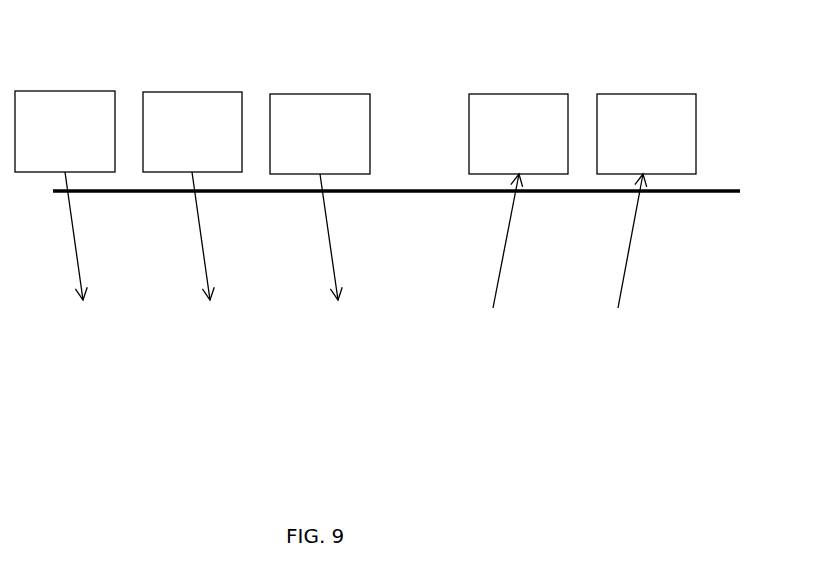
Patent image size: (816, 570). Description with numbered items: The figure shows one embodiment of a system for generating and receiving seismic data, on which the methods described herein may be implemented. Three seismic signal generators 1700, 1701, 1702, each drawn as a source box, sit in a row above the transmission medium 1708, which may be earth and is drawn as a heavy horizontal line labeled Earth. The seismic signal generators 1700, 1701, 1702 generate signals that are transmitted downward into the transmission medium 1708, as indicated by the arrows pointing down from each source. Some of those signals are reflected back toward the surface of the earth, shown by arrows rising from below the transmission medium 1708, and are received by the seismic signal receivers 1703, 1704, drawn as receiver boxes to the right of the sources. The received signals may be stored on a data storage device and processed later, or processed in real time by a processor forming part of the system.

The seismic signal generator 1700 is at (62, 91).
The seismic signal generator 1701 is at (189, 92).
The seismic signal generator 1702 is at (318, 94).
The seismic signal receiver 1703 is at (516, 94).
The seismic signal receiver 1704 is at (643, 94).
The transmission medium 1708 is at (396, 320).